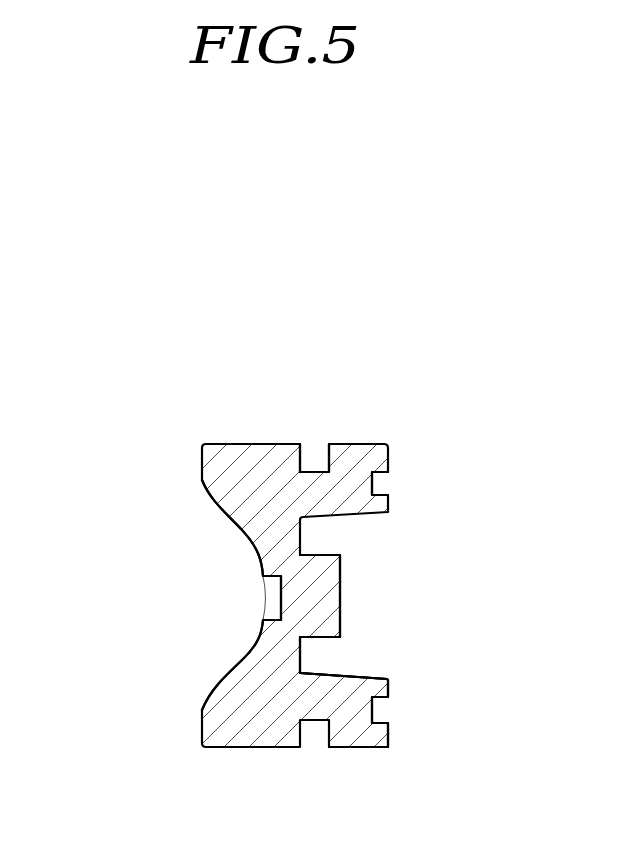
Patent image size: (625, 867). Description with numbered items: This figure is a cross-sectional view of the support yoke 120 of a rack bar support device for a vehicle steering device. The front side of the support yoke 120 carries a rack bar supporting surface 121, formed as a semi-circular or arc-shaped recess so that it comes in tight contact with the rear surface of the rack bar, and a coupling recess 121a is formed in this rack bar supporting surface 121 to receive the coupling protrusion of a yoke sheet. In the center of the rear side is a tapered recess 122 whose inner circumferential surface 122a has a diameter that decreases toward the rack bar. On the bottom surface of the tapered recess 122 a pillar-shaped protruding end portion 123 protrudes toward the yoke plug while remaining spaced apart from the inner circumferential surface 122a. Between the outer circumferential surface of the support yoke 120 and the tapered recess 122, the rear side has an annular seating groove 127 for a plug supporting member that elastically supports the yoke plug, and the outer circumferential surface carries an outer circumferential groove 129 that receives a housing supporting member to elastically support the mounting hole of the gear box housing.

The support yoke 120 is at (92, 334).
The rack bar supporting surface 121 is at (232, 513).
The coupling recess 121a is at (262, 594).
The tapered recess 122 is at (297, 657).
The inner circumferential surface 122a is at (343, 677).
The protruding end portion 123 is at (340, 597).
The seating groove 127 is at (373, 480).
The outer circumferential groove 129 is at (318, 470).